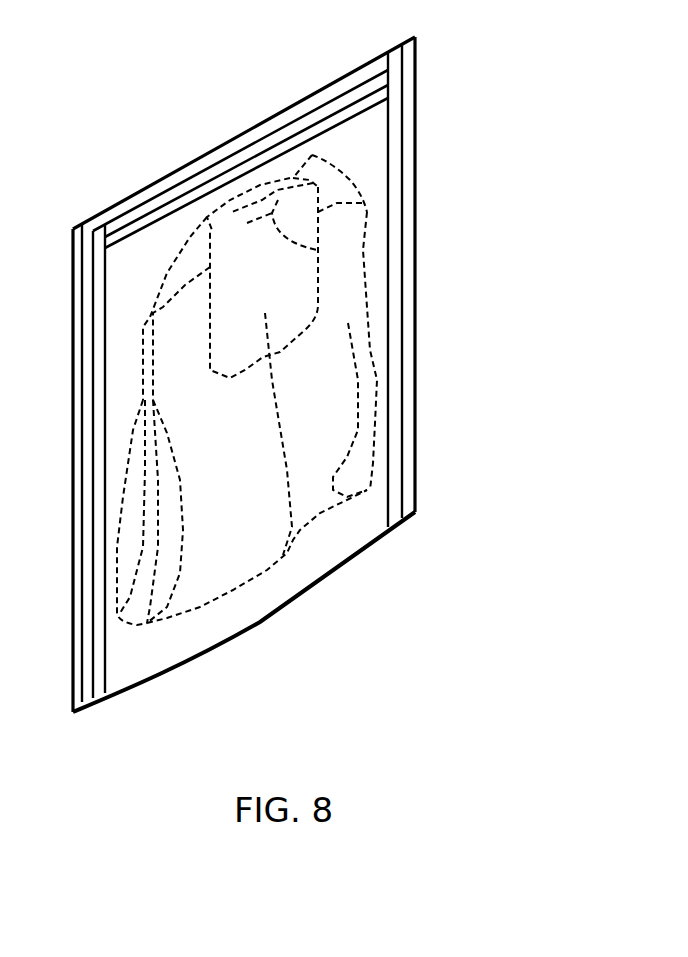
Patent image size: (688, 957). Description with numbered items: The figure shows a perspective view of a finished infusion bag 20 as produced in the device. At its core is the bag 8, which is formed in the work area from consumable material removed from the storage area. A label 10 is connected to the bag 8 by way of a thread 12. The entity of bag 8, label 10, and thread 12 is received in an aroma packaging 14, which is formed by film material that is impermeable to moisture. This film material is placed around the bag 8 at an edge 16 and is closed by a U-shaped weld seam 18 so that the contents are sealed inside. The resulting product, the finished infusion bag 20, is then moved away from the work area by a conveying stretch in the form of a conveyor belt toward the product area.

The finished infusion bag 20 is at (216, 82).
The bag 8 is at (352, 382).
The label 10 is at (310, 238).
The thread 12 is at (293, 528).
The aroma packaging 14 is at (387, 127).
The edge 16 is at (246, 628).
The U-shaped weld seam 18 is at (88, 238).